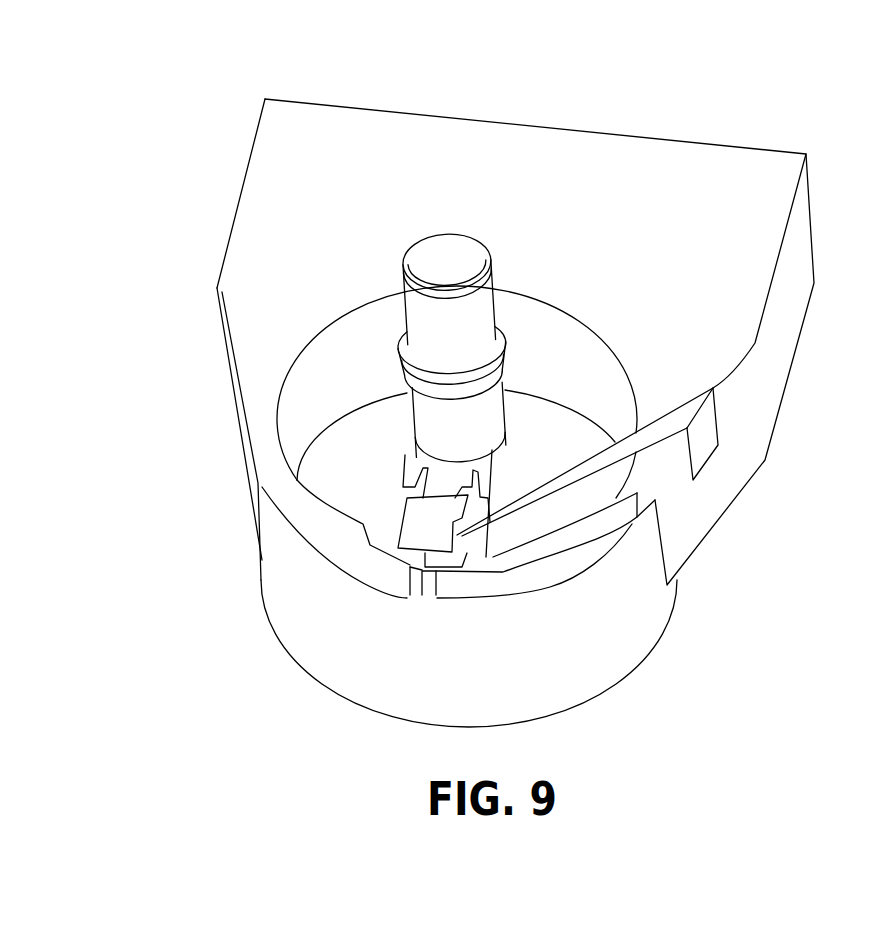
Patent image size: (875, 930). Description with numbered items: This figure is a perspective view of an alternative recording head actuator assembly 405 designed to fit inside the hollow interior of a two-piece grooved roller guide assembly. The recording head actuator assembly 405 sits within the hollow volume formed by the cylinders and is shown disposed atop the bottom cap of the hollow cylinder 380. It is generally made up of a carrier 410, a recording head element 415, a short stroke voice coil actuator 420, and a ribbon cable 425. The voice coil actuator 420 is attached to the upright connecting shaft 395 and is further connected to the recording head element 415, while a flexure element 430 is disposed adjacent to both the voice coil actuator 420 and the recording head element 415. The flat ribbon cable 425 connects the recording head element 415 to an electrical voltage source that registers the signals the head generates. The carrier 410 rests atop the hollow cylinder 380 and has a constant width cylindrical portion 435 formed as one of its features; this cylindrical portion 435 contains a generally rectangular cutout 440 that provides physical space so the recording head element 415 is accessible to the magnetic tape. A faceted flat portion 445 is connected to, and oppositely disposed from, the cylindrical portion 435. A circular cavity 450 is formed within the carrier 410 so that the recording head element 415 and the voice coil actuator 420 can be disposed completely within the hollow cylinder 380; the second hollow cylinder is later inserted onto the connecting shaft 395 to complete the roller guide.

The hollow cylinder 380 is at (372, 623).
The connecting shaft 395 is at (462, 337).
The recording head actuator assembly 405 is at (487, 572).
The carrier 410 is at (232, 388).
The recording head element 415 is at (432, 595).
The short stroke voice coil actuator 420 is at (445, 480).
The ribbon cable 425 is at (712, 447).
The flexure element 430 is at (425, 535).
The constant width cylindrical portion 435 is at (320, 550).
The rectangular cutout 440 is at (417, 605).
The faceted flat portion 445 is at (312, 127).
The circular cavity 450 is at (355, 470).